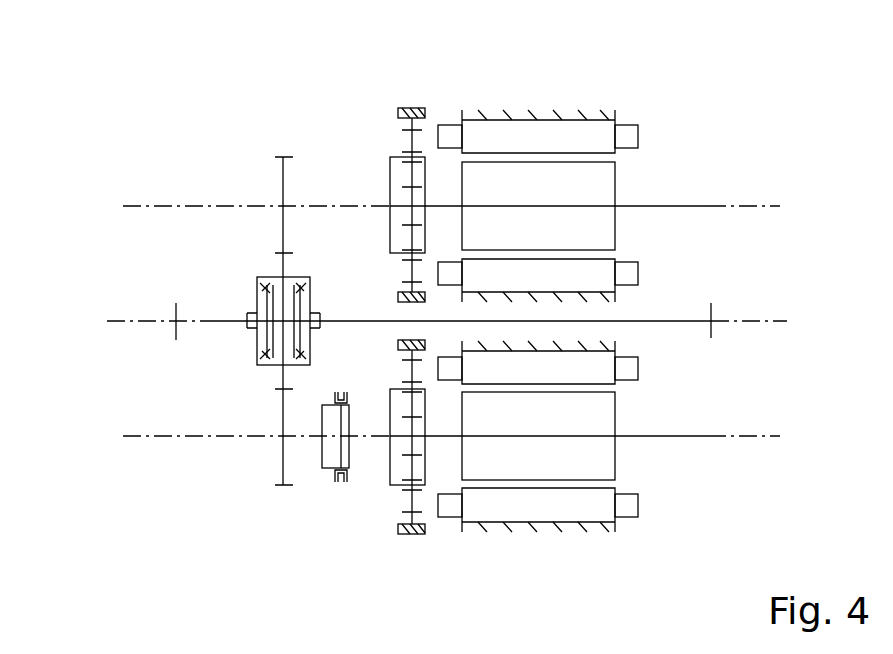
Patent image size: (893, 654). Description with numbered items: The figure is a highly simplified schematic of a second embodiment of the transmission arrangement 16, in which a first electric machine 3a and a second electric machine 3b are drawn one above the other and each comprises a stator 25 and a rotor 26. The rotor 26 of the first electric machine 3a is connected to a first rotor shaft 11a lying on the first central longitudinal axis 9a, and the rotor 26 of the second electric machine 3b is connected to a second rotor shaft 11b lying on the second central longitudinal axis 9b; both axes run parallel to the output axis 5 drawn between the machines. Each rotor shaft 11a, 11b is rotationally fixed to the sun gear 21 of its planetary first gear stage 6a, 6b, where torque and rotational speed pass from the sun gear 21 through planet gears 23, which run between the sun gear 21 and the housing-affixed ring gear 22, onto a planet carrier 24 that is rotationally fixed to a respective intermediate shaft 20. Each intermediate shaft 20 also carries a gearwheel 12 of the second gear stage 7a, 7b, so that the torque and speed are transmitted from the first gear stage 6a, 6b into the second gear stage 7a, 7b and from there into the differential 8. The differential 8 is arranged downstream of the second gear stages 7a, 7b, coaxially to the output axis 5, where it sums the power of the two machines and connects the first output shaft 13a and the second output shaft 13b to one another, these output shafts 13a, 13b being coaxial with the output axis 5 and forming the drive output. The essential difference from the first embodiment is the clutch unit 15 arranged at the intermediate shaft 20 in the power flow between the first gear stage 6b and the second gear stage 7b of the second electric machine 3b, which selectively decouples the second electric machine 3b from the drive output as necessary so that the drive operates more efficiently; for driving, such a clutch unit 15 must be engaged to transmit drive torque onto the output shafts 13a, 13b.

The first electric machine 3a is at (570, 103).
The second electric machine 3b is at (570, 537).
The output axis 5 is at (728, 320).
The first gear stage 6a is at (412, 93).
The first gear stage 6b is at (412, 548).
The second gear stage 7a is at (283, 103).
The second gear stage 7b is at (283, 512).
The differential 8 is at (247, 337).
The first central longitudinal axis 9a is at (177, 206).
The second central longitudinal axis 9b is at (220, 437).
The first rotor shaft 11a is at (433, 207).
The second rotor shaft 11b is at (433, 435).
The gearwheel 12 is at (283, 192).
The first output shaft 13a is at (217, 320).
The second output shaft 13b is at (625, 321).
The clutch unit 15 is at (342, 505).
The transmission arrangement 16 is at (690, 128).
The intermediate shaft 20 is at (330, 204).
The sun gear 21 is at (413, 197).
The ring gear 22 is at (423, 110).
The planet gears 23 is at (395, 155).
The planet carrier 24 is at (390, 177).
The stator 25 is at (585, 140).
The rotor 26 is at (583, 183).